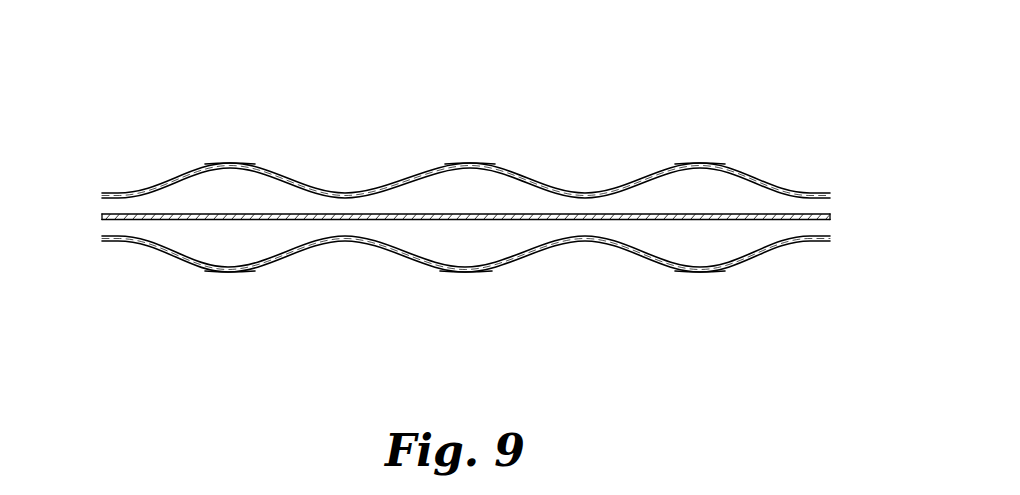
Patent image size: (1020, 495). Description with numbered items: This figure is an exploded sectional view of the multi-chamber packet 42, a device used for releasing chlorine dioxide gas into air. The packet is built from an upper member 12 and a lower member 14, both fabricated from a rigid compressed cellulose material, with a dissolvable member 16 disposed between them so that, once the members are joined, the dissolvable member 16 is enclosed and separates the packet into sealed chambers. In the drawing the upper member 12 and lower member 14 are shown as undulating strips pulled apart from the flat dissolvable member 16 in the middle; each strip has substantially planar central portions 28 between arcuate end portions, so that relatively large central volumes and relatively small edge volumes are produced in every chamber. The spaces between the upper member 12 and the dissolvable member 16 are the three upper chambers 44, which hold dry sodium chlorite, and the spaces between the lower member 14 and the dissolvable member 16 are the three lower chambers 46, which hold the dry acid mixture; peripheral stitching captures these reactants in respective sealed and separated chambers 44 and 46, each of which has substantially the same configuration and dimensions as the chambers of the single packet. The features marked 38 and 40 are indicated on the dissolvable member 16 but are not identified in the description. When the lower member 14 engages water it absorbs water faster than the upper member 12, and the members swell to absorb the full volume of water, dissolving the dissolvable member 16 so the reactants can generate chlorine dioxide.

The upper member 12 is at (300, 178).
The lower member 14 is at (162, 263).
The dissolvable member 16 is at (491, 210).
The central portion 28 is at (235, 166).
The first surface of substrate 38 is at (737, 214).
The second surface of substrate 40 is at (741, 220).
The multi-chamber packet 42 is at (513, 122).
The upper chambers 44 is at (175, 194).
The lower chambers 46 is at (270, 243).